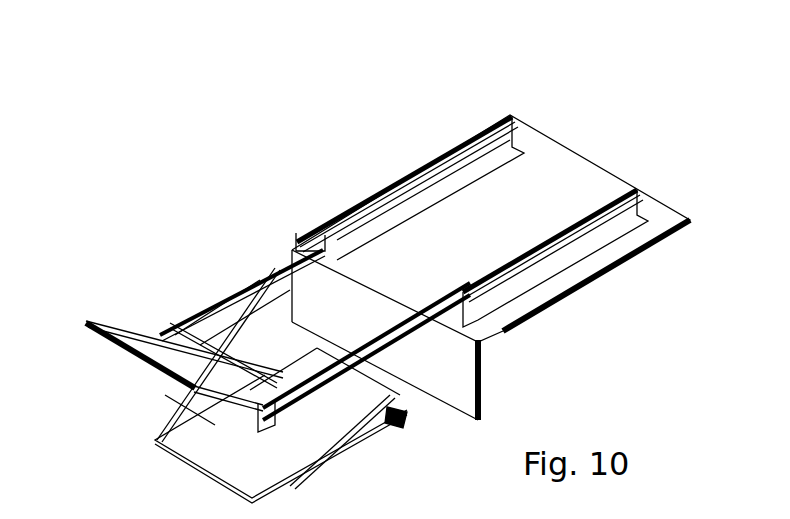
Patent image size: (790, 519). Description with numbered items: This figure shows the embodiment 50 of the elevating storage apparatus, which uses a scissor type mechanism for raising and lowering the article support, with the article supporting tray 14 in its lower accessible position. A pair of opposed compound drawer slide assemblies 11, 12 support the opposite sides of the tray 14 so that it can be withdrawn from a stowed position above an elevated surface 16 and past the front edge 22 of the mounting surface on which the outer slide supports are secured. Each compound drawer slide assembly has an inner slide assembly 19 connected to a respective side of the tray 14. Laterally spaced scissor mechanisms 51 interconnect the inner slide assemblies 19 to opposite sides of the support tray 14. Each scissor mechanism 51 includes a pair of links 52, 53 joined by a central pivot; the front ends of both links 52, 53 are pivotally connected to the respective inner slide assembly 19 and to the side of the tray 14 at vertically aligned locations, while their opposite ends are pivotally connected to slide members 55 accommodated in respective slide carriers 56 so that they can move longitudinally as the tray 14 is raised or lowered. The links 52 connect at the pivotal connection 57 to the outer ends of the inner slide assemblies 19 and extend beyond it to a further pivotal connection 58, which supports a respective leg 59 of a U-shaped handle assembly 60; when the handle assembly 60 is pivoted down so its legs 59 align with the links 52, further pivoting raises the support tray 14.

The compound drawer slide assembly 11 is at (500, 112).
The compound drawer slide assembly 12 is at (622, 190).
The article supporting tray 14 is at (281, 439).
The elevated surface 16 is at (491, 267).
The inner slide assembly 19 is at (220, 280).
The front edge 22 is at (505, 332).
The embodiment 50 is at (287, 212).
The scissor mechanism 51 is at (159, 418).
The link 52 is at (200, 340).
The link 53 is at (218, 318).
The slide member 55 is at (258, 262).
The slide carrier 56 is at (402, 422).
The pivotal connection 57 is at (185, 385).
The pivotal connection 58 is at (155, 325).
The leg 59 is at (125, 347).
The U-shaped handle assembly 60 is at (95, 320).